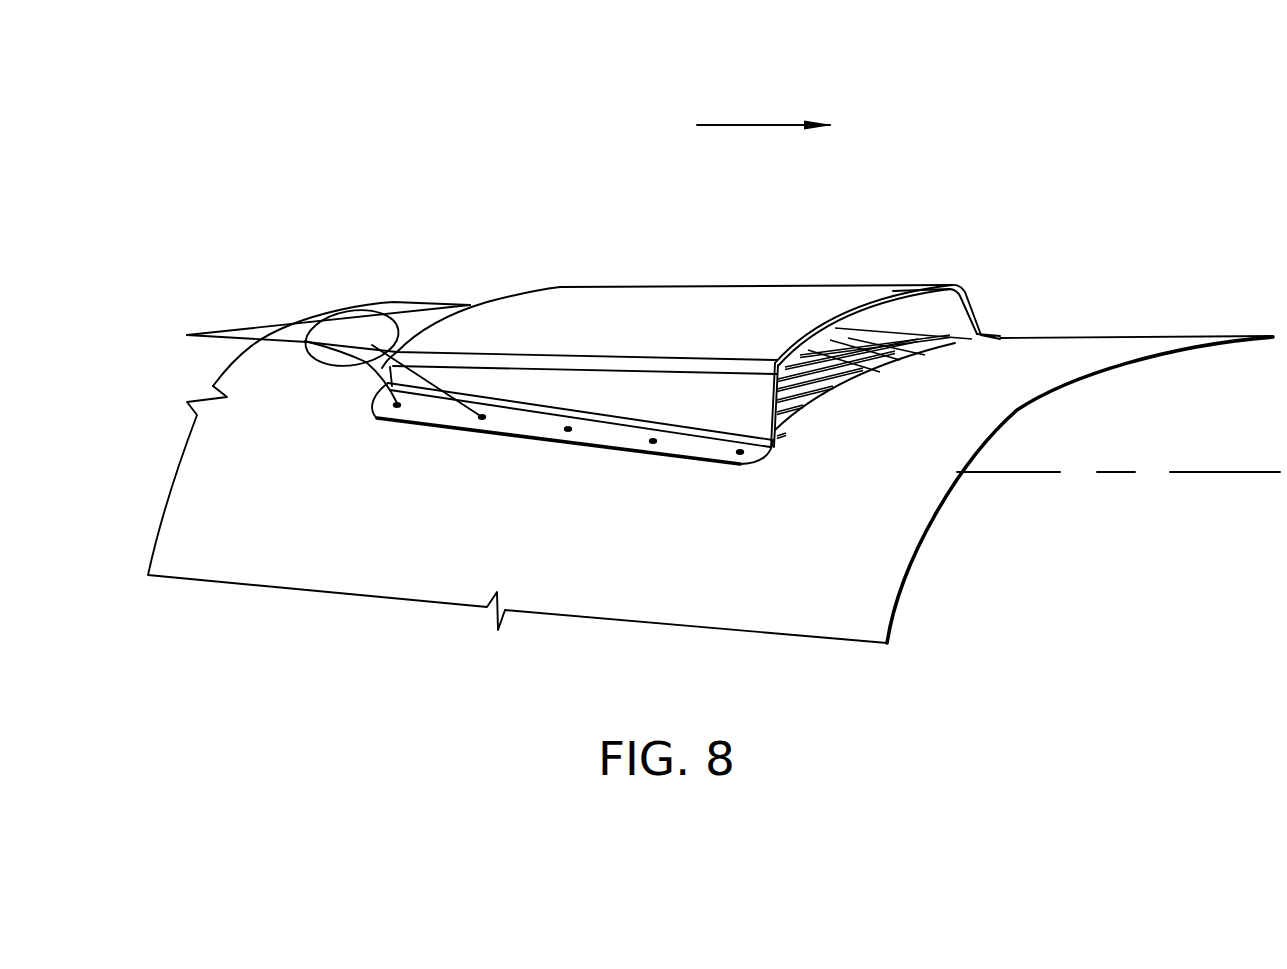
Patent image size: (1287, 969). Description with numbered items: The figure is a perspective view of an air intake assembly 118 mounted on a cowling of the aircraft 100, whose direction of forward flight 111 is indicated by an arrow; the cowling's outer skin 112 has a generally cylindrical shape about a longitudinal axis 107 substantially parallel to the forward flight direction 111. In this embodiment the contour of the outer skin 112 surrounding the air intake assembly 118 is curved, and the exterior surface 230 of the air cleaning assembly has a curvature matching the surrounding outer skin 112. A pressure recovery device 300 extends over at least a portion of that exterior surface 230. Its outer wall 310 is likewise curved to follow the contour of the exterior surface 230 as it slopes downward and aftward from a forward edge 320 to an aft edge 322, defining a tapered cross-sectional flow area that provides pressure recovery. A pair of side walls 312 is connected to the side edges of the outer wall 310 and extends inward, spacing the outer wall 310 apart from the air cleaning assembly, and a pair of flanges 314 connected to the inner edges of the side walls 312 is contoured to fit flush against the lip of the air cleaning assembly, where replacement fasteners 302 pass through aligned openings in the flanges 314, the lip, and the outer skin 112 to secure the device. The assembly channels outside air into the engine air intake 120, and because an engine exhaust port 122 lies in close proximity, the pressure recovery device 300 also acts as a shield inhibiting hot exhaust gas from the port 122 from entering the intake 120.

The aircraft 100 is at (1165, 218).
The longitudinal axis 107 is at (1213, 472).
The direction of forward flight 111 is at (750, 125).
The outer skin 112 is at (1123, 367).
The air intake assembly 118 is at (438, 160).
The engine air intake 120 is at (968, 511).
The engine exhaust port 122 is at (334, 318).
The exterior surface 230 is at (832, 330).
The pressure recovery device 300 is at (541, 296).
The replacement fasteners 302 is at (453, 332).
The outer wall 310 is at (612, 305).
The side walls 312 is at (947, 317).
The flanges 314 is at (992, 337).
The forward edge 320 is at (877, 297).
The aft edge 322 is at (435, 328).